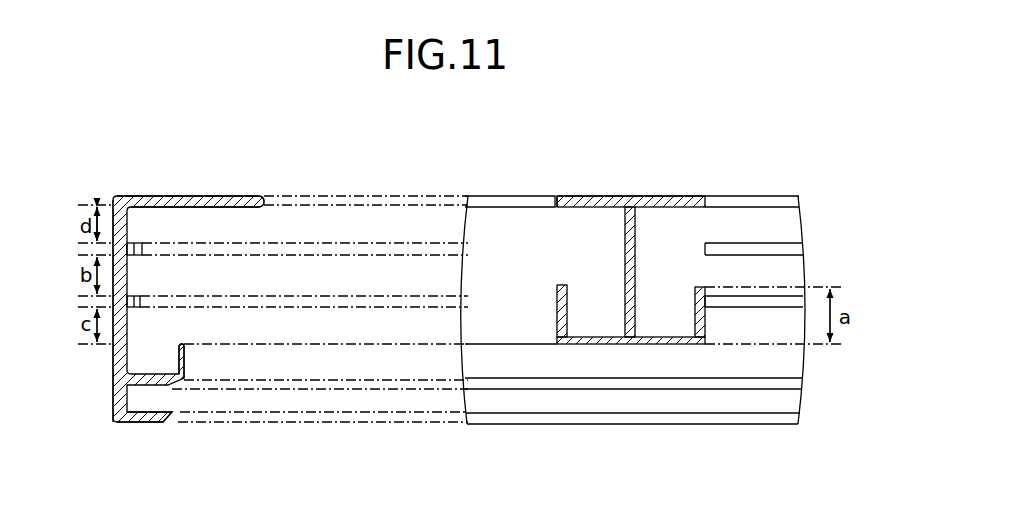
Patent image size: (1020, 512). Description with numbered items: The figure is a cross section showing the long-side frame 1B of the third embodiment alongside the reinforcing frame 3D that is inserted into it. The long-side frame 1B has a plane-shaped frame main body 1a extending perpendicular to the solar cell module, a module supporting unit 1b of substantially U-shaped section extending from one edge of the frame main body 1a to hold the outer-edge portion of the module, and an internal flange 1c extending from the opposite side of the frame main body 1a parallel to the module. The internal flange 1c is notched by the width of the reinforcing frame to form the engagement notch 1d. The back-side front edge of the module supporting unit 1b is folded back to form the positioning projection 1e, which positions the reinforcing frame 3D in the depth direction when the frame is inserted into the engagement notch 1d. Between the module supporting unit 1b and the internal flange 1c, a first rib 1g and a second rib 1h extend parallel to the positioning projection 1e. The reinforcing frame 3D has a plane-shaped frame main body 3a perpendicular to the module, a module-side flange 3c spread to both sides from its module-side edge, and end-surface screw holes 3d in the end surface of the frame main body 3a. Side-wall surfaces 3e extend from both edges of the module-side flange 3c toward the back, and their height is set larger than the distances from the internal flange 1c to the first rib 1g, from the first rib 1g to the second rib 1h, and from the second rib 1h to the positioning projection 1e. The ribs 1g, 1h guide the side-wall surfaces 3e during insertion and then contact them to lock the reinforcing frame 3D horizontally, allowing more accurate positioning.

The frame main body 1a is at (113, 352).
The long-side frame 1B is at (125, 195).
The internal flange 1c is at (194, 196).
The first rib 1g is at (138, 244).
The second rib 1h is at (138, 297).
The positioning projection 1e is at (182, 344).
The module supporting unit 1b is at (127, 398).
The engagement notch 1d is at (557, 200).
The end-surface screw holes 3d is at (612, 196).
The reinforcing frame 3D is at (676, 196).
The frame main body 3a is at (636, 234).
The side-wall surfaces 3e is at (568, 292).
The module-side flange 3c is at (658, 336).